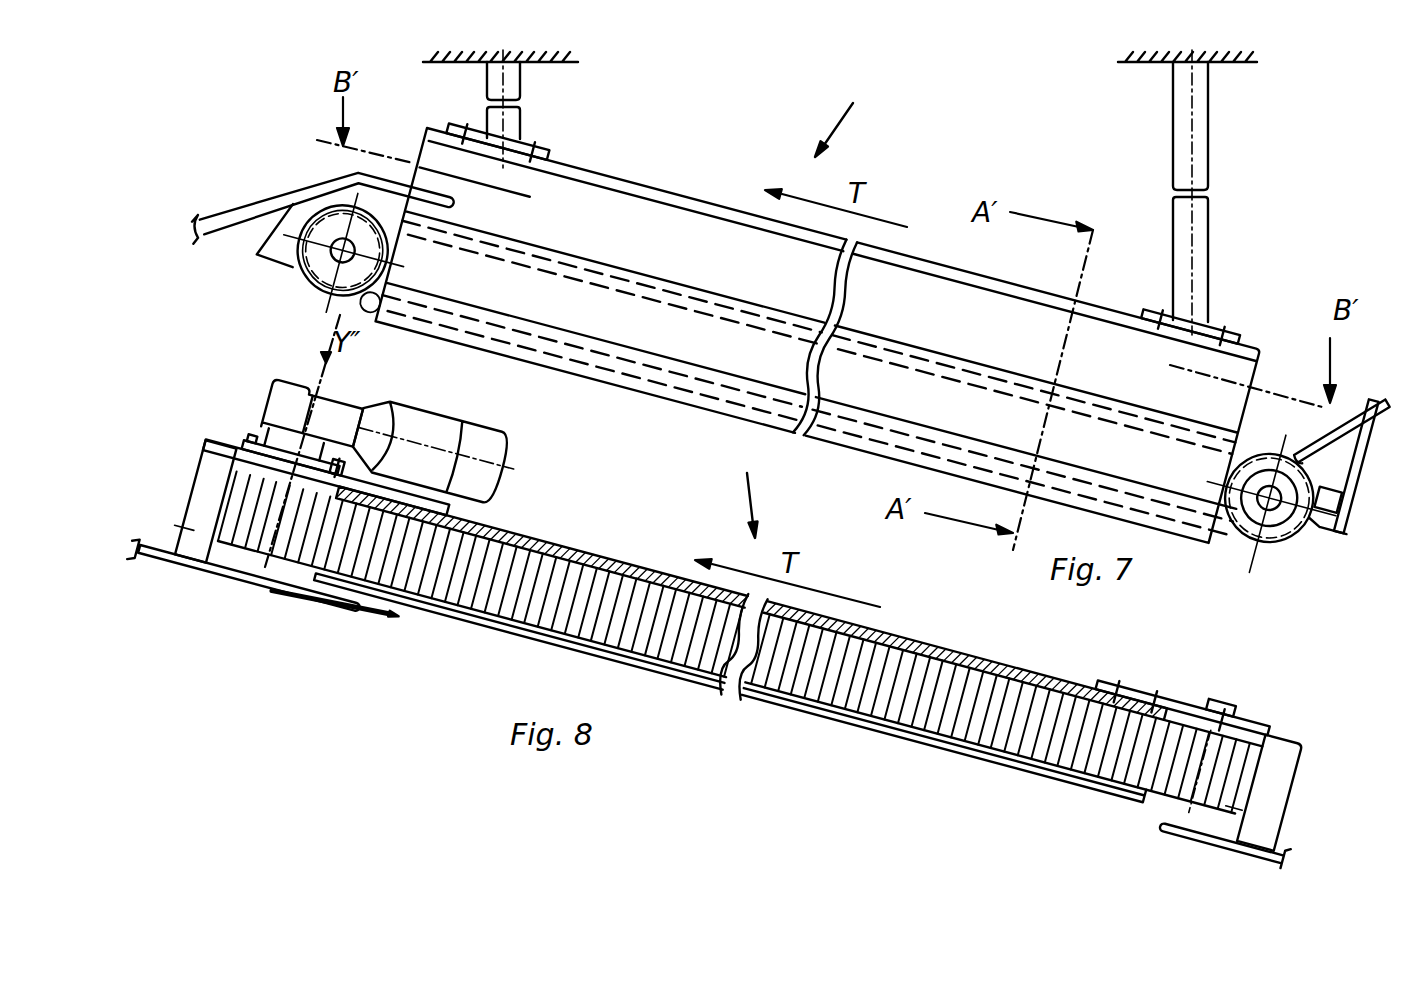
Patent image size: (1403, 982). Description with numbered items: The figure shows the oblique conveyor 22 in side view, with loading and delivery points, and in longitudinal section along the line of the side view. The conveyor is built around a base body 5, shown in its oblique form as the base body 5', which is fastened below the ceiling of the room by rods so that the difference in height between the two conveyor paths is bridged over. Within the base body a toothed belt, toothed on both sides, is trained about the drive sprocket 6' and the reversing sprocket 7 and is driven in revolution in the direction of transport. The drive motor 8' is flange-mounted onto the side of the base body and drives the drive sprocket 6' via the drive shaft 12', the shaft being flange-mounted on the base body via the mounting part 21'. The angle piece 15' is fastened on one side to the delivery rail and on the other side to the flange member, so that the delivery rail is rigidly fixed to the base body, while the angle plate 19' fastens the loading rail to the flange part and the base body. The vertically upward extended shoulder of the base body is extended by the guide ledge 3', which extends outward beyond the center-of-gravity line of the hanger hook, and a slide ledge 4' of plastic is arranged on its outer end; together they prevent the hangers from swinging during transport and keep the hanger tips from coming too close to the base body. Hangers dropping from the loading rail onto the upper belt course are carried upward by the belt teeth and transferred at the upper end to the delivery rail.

In FIG. 7, the base body 5 is at (828, 330).
In FIG. 7, the drive sprocket 6' is at (335, 253).
In FIG. 7, the reversing sprocket 7 is at (1273, 513).
In FIG. 7, the oblique conveyor 22 is at (852, 117).
In FIG. 8, the oblique conveyor 22 is at (741, 492).
In FIG. 8, the angle piece 15' is at (192, 500).
In FIG. 8, the mounting part 21' is at (214, 403).
In FIG. 8, the drive shaft 12' is at (297, 403).
In FIG. 8, the drive motor 8' is at (435, 442).
In FIG. 8, the base body 5' is at (751, 602).
In FIG. 8, the guide ledge 3' is at (726, 688).
In FIG. 8, the slide ledge 4' is at (730, 707).
In FIG. 8, the angle plate 19' is at (1304, 793).